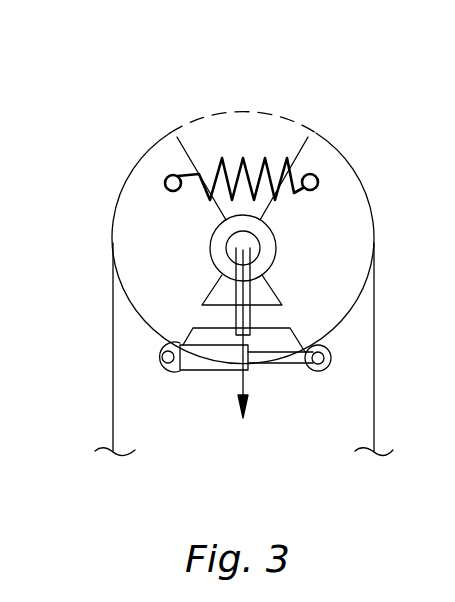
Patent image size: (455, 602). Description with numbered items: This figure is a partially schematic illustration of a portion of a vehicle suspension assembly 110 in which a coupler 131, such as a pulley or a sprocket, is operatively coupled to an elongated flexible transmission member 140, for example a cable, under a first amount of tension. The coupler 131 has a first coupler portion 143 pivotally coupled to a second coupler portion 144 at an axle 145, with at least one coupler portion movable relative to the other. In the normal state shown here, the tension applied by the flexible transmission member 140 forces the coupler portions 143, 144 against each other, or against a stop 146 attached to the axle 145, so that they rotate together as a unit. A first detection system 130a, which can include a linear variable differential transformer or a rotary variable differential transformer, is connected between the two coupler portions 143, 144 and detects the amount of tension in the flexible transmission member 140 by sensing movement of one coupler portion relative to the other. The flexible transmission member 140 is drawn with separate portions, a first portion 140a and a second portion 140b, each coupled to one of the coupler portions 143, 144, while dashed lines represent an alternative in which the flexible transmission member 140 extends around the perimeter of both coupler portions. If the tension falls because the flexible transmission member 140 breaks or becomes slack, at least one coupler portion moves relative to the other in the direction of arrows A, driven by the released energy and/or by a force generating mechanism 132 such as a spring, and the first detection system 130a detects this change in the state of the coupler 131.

The vehicle suspension assembly 110 is at (92, 420).
The coupler 131 is at (180, 95).
The flexible transmission member 140 is at (237, 116).
The first portion 140a is at (112, 377).
The second portion 140b is at (374, 375).
The force generating mechanism 132 is at (247, 165).
The first coupler portion 143 is at (125, 222).
The second coupler portion 144 is at (342, 218).
The axle 145 is at (232, 249).
The stop 146 is at (247, 290).
The first detection system 130a is at (202, 368).